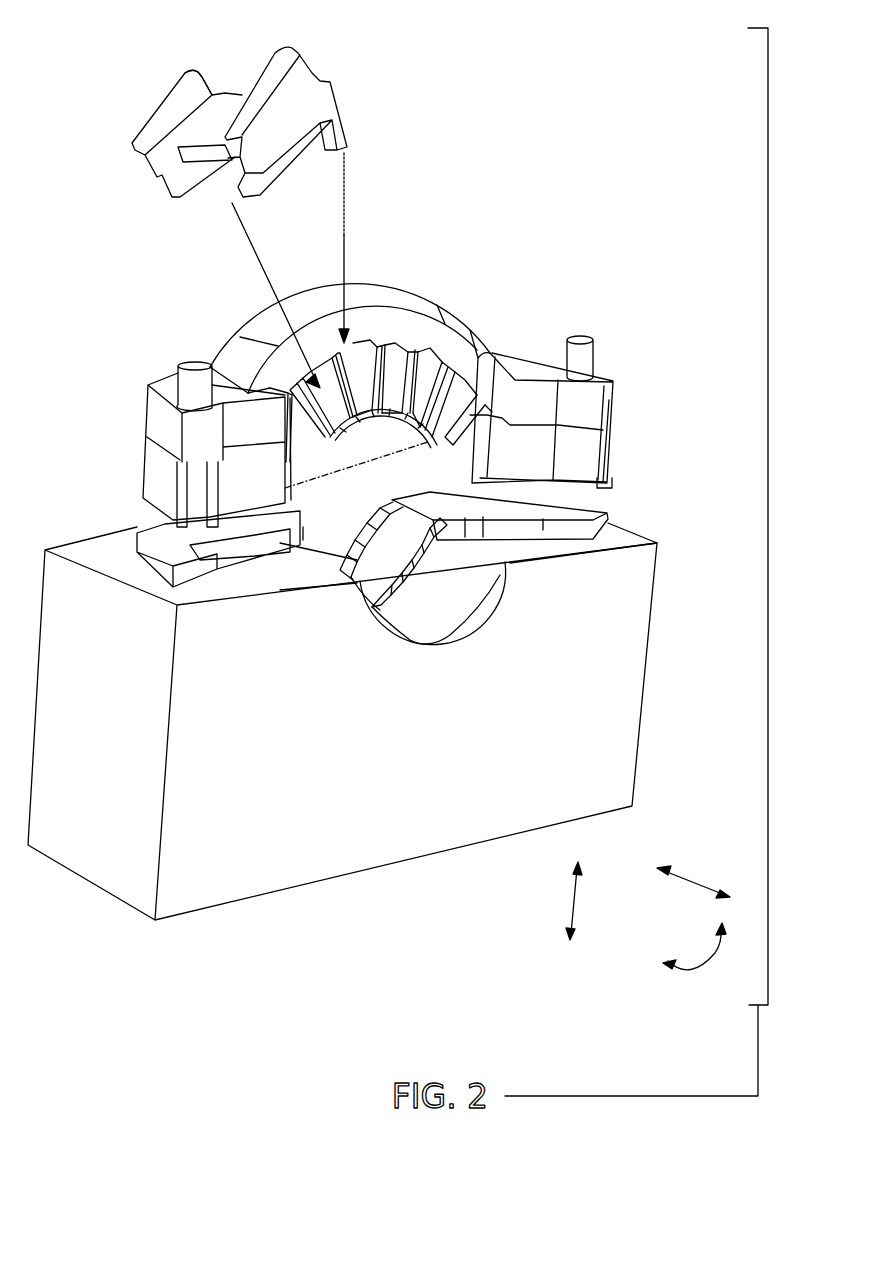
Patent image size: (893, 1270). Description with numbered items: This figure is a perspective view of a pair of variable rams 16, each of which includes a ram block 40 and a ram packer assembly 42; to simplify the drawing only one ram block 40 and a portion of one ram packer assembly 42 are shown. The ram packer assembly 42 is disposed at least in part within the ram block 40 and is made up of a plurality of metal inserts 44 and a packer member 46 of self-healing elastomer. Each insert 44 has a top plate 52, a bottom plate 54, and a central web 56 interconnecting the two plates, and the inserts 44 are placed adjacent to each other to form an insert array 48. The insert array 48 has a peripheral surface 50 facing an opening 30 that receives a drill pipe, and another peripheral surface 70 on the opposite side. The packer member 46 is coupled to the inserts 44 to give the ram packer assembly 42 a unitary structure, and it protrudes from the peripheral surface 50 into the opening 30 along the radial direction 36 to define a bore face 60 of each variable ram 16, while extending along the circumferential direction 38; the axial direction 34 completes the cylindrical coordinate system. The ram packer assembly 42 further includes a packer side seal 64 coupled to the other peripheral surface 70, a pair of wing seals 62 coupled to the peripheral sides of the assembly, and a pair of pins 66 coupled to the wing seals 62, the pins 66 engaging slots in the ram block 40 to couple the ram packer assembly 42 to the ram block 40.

The variable ram 16 is at (640, 408).
The opening 30 is at (308, 533).
The axial direction 34 is at (700, 878).
The radial direction 36 is at (585, 903).
The circumferential direction 38 is at (703, 957).
The ram block 40 is at (226, 733).
The ram packer assembly 42 is at (622, 519).
The inserts 44 is at (440, 378).
The packer member 46 is at (410, 597).
The insert array 48 is at (390, 607).
The peripheral surface 50 is at (404, 443).
The top plate 52 is at (300, 108).
The bottom plate 54 is at (138, 148).
The central web 56 is at (215, 120).
The bore face 60 is at (300, 480).
The wing seals 62 is at (200, 438).
The packer side seal 64 is at (398, 313).
The pins 66 is at (175, 380).
The another peripheral surface 70 is at (325, 350).